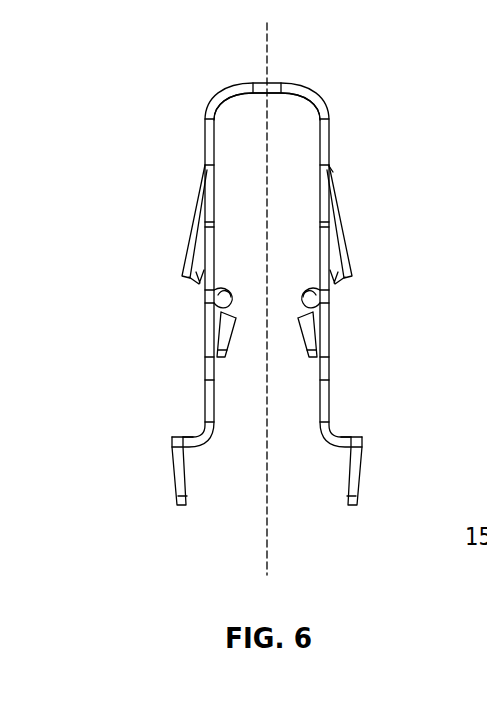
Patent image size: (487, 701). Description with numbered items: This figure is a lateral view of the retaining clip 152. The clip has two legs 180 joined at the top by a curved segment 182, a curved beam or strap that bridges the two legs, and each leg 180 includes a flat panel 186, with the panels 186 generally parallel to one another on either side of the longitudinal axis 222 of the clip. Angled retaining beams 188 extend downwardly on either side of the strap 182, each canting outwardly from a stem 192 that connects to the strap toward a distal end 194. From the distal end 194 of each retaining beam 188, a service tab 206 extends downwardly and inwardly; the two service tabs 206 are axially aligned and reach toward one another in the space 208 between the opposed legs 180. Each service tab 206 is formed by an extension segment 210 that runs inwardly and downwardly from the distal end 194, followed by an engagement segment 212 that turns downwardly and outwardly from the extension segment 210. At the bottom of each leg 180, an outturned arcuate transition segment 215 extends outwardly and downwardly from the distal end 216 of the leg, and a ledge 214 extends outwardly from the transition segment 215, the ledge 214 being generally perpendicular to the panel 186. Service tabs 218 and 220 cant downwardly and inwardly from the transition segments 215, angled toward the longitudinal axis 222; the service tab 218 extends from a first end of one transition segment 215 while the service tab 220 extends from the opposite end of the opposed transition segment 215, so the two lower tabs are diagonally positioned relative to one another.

The retaining clip 152 is at (198, 72).
The curved segment 182 is at (281, 83).
The space 208 is at (290, 156).
The leg 180 is at (205, 165).
The stem 192 is at (331, 171).
The retaining beam 188 is at (192, 222).
The distal end 194 is at (186, 270).
The extension segment 210 is at (207, 302).
The service tab 206 is at (221, 289).
The flat panel 186 is at (205, 362).
The engagement segment 212 is at (224, 358).
The distal end 216 is at (207, 418).
The ledge 214 is at (188, 446).
The transition segment 215 is at (213, 433).
The service tab 220 is at (183, 506).
The service tab 218 is at (360, 490).
The longitudinal axis 222 is at (268, 553).